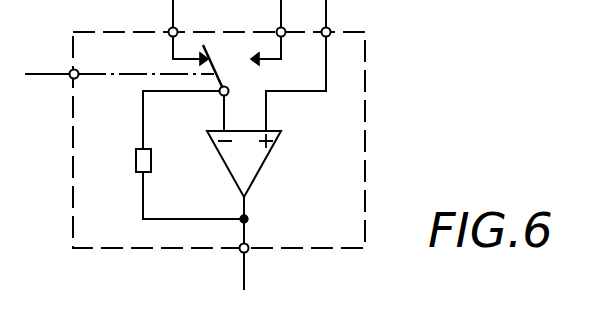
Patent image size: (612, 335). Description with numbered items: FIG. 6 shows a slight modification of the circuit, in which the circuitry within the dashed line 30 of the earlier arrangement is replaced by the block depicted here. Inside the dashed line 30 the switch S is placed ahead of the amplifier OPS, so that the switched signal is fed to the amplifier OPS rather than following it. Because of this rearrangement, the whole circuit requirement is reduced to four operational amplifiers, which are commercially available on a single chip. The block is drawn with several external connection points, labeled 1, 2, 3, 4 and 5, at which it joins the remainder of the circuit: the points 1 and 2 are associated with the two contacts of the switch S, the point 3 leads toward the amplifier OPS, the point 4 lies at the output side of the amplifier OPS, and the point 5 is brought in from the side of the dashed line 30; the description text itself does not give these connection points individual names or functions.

The first switch terminal 1 is at (180, 33).
The second switch terminal 2 is at (276, 33).
The non-inverting input terminal 3 is at (307, 65).
The output terminal 4 is at (231, 267).
The switch control terminal 5 is at (119, 60).
The dashed line 30 is at (365, 122).
The switch S is at (193, 132).
The amplifier OPS is at (268, 189).